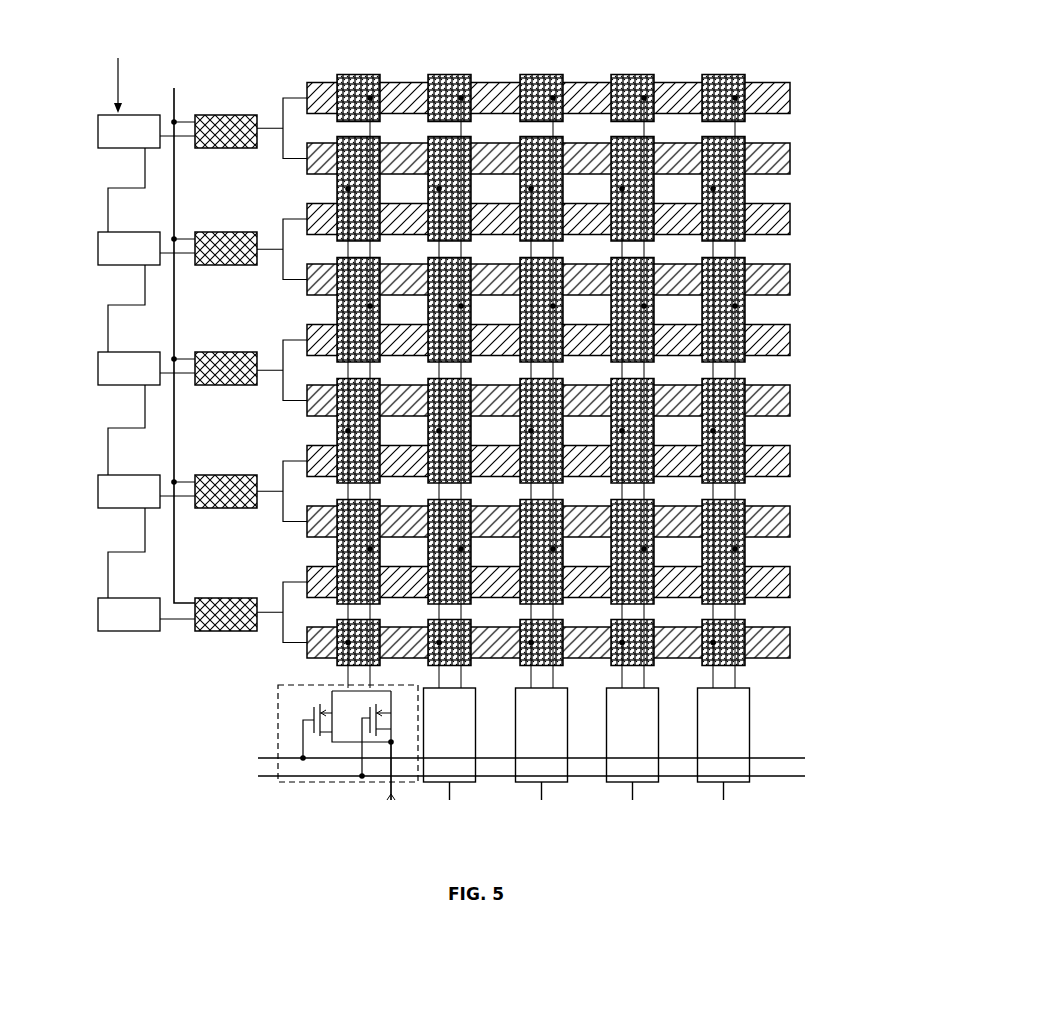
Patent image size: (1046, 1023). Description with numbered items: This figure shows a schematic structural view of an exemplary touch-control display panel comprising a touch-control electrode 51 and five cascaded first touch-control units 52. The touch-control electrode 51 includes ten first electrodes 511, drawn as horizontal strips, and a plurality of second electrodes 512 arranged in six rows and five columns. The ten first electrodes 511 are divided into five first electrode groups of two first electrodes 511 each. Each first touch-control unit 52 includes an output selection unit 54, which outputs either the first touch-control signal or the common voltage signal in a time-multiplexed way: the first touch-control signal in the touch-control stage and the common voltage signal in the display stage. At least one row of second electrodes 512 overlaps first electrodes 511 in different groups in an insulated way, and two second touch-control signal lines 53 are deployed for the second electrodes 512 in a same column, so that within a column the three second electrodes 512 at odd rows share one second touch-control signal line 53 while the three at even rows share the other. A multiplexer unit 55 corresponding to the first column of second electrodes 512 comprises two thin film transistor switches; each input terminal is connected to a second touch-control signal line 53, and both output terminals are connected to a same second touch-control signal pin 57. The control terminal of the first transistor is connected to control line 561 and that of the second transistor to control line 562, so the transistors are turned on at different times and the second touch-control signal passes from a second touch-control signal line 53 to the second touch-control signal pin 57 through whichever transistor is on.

The touch-control electrode 51 is at (375, 50).
The first electrode 511 is at (506, 80).
The second electrode 512 is at (630, 75).
The first touch-control unit 52 is at (100, 118).
The second touch-control signal line 53 is at (742, 679).
The output selection unit 54 is at (249, 113).
The multiplexer unit 55 is at (278, 691).
The control line 561 is at (258, 758).
The control line 562 is at (258, 776).
The second touch-control signal pin 57 is at (389, 788).